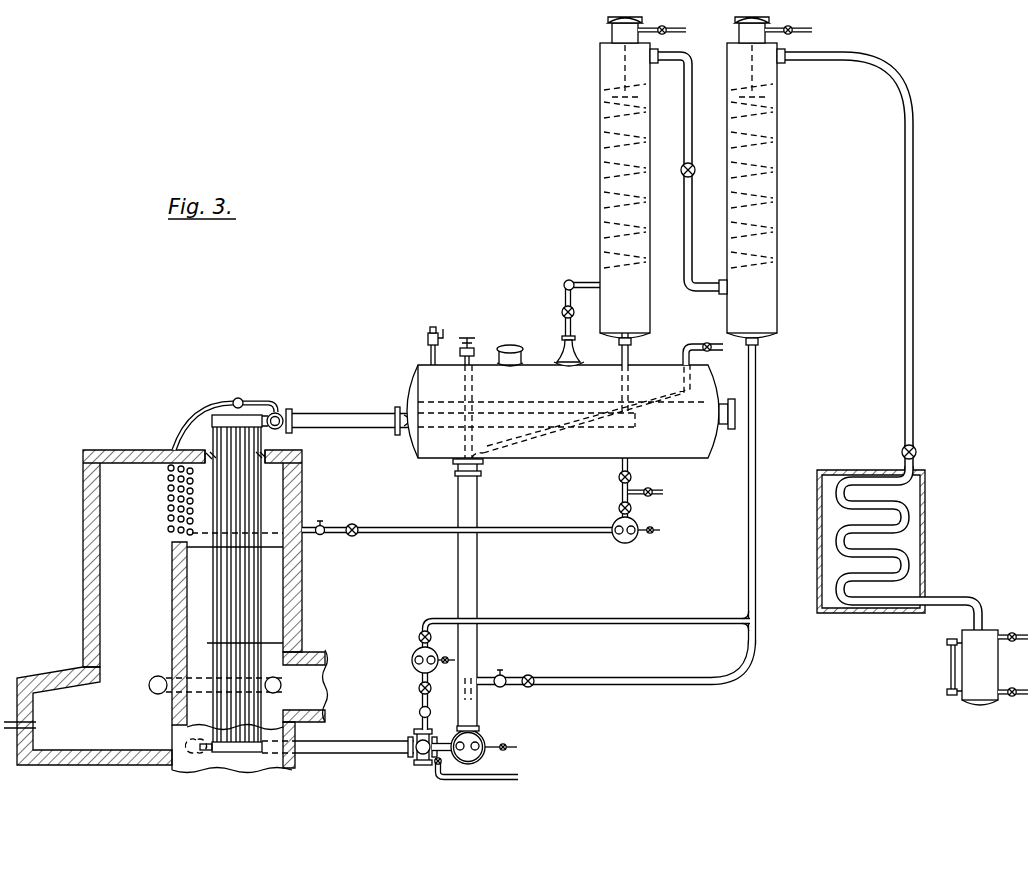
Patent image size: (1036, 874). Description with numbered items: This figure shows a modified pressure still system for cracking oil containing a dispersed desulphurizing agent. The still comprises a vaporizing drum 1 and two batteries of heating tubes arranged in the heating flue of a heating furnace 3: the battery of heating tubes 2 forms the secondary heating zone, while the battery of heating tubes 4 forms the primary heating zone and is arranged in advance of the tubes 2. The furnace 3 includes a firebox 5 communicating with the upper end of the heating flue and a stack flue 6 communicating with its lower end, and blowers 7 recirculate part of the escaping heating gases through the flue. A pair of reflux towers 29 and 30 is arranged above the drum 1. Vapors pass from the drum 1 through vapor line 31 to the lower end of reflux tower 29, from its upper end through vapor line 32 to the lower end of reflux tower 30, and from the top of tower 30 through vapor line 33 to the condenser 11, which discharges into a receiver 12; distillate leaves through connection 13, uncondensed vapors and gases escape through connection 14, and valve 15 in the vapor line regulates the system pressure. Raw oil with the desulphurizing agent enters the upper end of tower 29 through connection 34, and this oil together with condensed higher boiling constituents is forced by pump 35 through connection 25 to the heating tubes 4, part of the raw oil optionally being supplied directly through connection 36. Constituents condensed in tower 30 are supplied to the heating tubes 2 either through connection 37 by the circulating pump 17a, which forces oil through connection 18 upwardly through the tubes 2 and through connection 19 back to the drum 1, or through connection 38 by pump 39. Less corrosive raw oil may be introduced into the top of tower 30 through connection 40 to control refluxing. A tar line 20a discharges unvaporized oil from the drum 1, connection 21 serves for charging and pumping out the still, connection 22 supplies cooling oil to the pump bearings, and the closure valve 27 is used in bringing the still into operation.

The vaporizing drum 1 is at (699, 460).
The battery of heating tubes 2 is at (259, 597).
The heating furnace 3 is at (83, 562).
The battery of heating tubes 4 is at (166, 497).
The firebox 5 is at (43, 693).
The stack flue 6 is at (321, 700).
The blowers 7 is at (157, 679).
The condenser 11 is at (840, 618).
The receiver 12 is at (967, 704).
The connection 13 is at (1020, 700).
The connection 14 is at (1018, 634).
The valve 15 is at (918, 454).
The circulating pump 17a is at (481, 737).
The connection 18 is at (357, 741).
The connection 19 is at (334, 427).
The tar line 20a is at (708, 344).
The connection 21 is at (514, 776).
The connection 22 is at (514, 745).
The connection 25 is at (364, 537).
The closure valve 27 is at (443, 468).
The reflux tower 29 is at (600, 187).
The reflux tower 30 is at (777, 180).
The vapor line 31 is at (565, 293).
The vapor line 32 is at (691, 152).
The vapor line 33 is at (914, 208).
The connection 34 is at (677, 30).
The pump 35 is at (623, 543).
The connection 36 is at (658, 475).
The connection 37 is at (634, 686).
The connection 38 is at (588, 491).
The pump 39 is at (410, 660).
The connection 40 is at (800, 30).